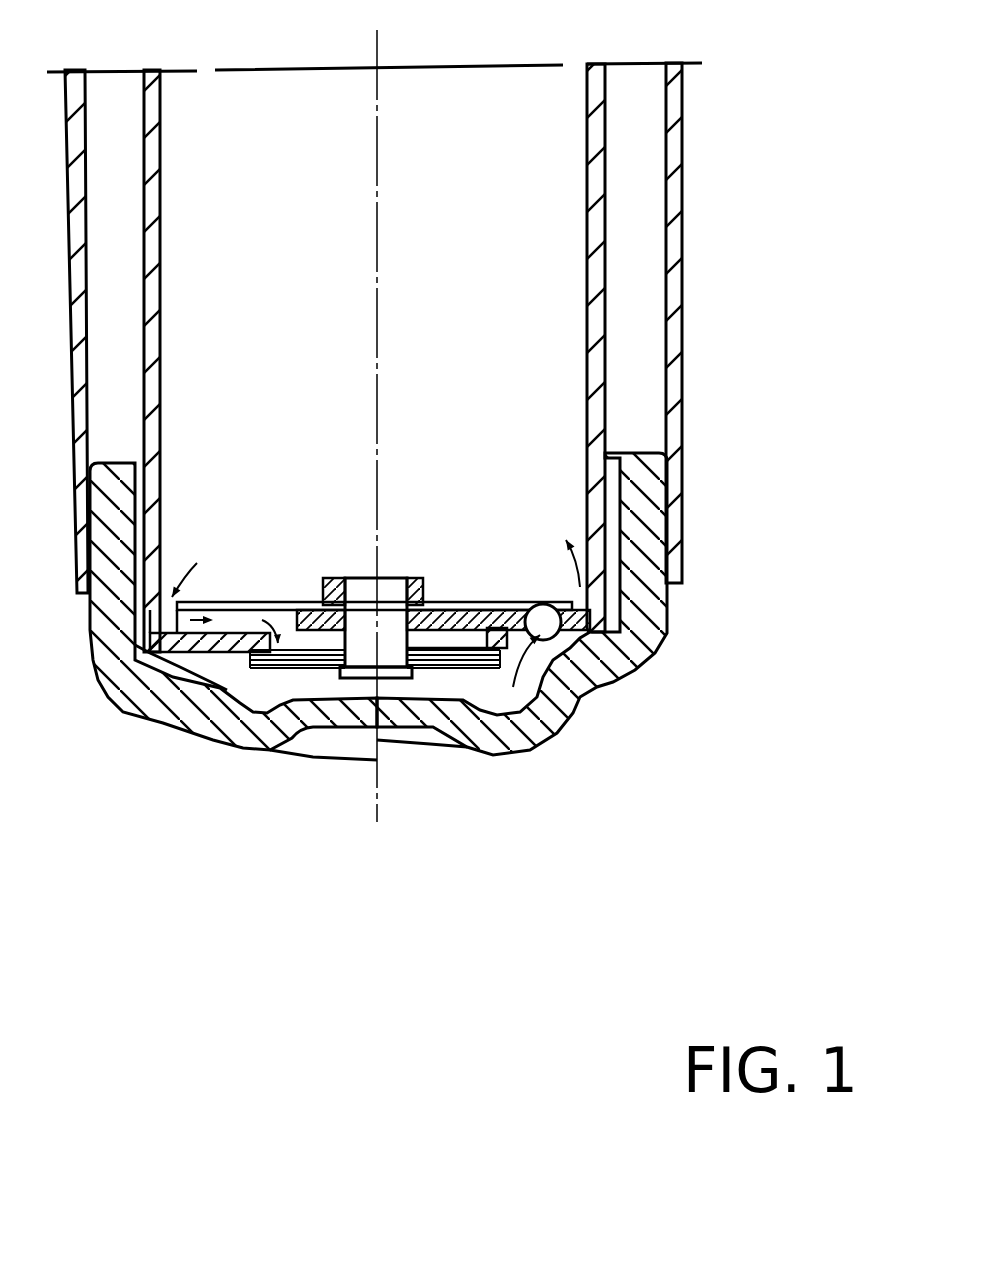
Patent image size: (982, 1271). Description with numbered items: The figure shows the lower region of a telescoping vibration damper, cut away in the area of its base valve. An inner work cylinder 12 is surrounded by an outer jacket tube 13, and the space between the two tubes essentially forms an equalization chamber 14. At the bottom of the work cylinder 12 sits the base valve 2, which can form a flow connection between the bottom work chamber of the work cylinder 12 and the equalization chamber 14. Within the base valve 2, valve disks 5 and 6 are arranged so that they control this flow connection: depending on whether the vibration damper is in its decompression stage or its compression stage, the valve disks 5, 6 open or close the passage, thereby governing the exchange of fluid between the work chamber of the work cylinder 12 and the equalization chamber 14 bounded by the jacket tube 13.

The base valve 2 is at (475, 670).
The valve disk 5 is at (272, 668).
The valve disk 6 is at (535, 600).
The work cylinder 12 is at (595, 210).
The jacket tube 13 is at (668, 295).
The equalization chamber 14 is at (630, 117).